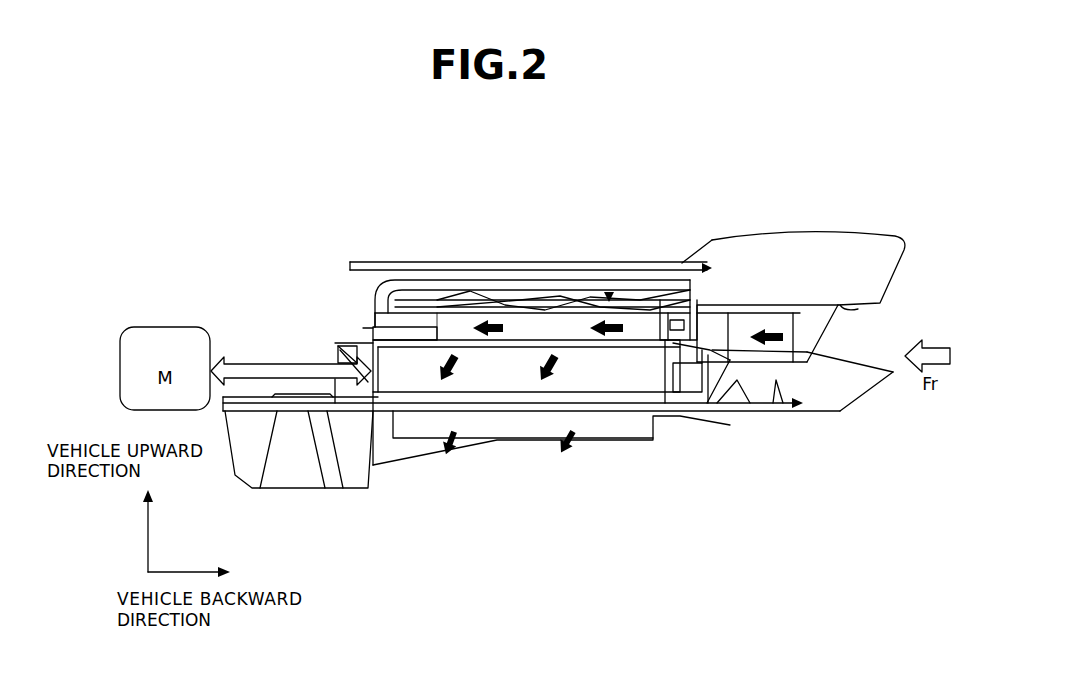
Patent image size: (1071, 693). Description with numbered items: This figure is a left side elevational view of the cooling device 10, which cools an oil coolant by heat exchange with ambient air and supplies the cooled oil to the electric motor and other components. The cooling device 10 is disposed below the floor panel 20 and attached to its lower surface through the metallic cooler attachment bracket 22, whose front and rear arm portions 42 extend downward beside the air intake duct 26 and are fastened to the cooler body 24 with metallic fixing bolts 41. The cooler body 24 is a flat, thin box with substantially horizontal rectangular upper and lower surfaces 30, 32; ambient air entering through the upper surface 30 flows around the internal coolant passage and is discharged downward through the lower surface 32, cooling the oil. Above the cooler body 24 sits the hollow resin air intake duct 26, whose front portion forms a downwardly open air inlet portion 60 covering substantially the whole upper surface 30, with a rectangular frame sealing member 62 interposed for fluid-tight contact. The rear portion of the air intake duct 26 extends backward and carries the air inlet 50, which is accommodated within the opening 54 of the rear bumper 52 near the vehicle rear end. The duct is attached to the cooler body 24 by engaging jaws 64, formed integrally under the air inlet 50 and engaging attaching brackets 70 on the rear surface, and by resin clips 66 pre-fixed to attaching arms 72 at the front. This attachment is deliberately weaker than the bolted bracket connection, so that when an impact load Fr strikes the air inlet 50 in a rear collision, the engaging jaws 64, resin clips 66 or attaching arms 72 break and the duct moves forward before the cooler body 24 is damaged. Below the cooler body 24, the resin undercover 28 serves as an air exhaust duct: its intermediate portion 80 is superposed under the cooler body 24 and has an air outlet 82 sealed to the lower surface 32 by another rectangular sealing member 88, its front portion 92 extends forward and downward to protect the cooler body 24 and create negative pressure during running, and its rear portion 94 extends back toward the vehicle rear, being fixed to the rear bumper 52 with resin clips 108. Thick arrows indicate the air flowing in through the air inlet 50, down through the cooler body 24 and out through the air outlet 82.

The cooling device 10 is at (296, 278).
The floor panel 20 is at (392, 262).
The cooler attachment bracket 22 is at (478, 281).
The cooler body 24 is at (476, 406).
The air intake duct 26 is at (609, 292).
The undercover 28 is at (392, 493).
The upper surface 30 is at (558, 340).
The lower surface 32 is at (548, 394).
The fixing bolts 41 is at (700, 280).
The arm portions 42 is at (377, 327).
The air inlet 50 is at (764, 305).
The rear bumper 52 is at (824, 246).
The opening 54 is at (860, 308).
The air inlet portion 60 is at (520, 326).
The sealing member 62 is at (446, 343).
The engaging jaws 64 is at (724, 412).
The resin clips 66 is at (340, 360).
The attaching brackets 70 is at (682, 400).
The attaching arms 72 is at (373, 340).
The intermediate portion 80 is at (607, 456).
The air outlet 82 is at (513, 423).
The sealing member 88 is at (431, 400).
The front portion 92 is at (291, 476).
The rear portion 94 is at (762, 412).
The resin clips 108 is at (800, 410).